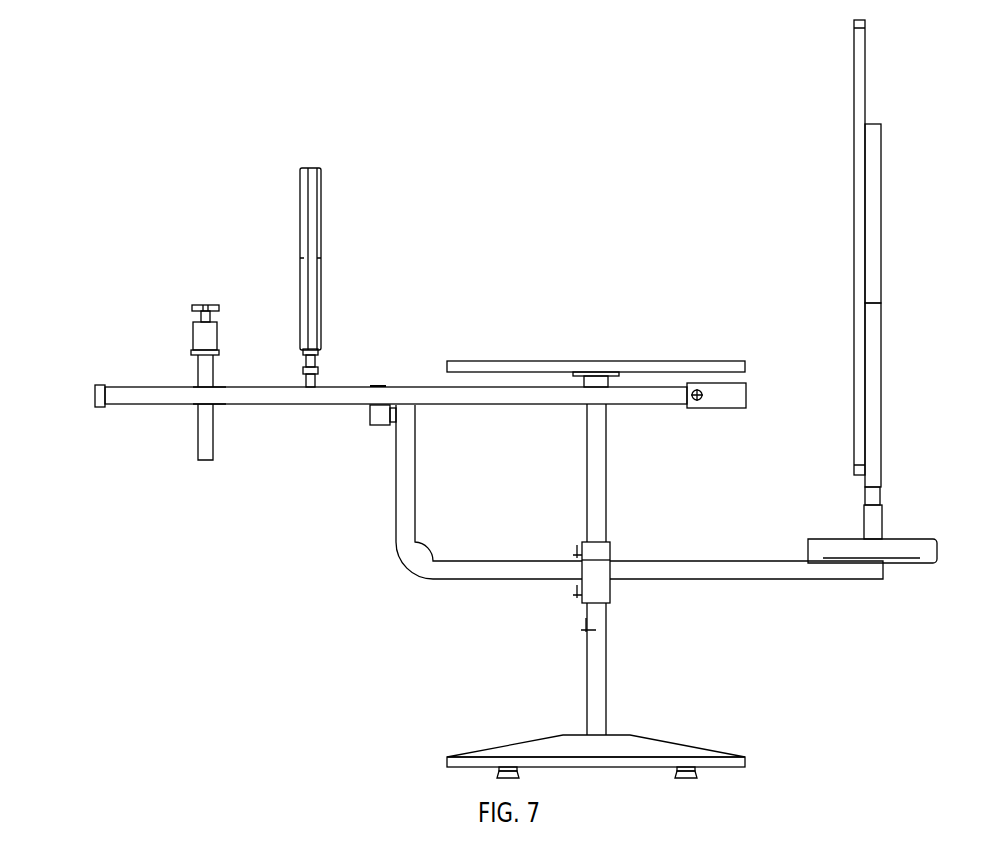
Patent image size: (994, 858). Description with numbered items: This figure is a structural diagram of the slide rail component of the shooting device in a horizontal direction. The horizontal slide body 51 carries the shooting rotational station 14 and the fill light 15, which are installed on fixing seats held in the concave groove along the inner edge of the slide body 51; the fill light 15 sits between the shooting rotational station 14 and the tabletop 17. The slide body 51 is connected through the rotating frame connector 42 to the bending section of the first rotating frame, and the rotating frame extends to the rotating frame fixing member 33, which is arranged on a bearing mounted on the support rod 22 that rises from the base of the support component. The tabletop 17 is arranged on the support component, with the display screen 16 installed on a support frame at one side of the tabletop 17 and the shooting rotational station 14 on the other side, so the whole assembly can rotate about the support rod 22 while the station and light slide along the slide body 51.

The shooting rotational station 14 is at (193, 307).
The fill light 15 is at (300, 212).
The display screen 16 is at (855, 192).
The tabletop 17 is at (542, 362).
The support rod 22 is at (608, 670).
The rotating frame fixing member 33 is at (614, 607).
The rotating frame connector 42 is at (368, 428).
The slide body 51 is at (148, 404).